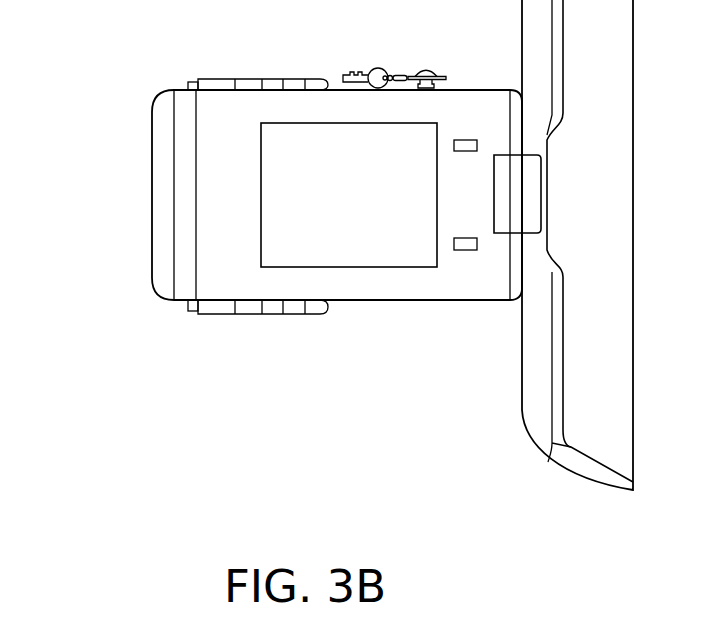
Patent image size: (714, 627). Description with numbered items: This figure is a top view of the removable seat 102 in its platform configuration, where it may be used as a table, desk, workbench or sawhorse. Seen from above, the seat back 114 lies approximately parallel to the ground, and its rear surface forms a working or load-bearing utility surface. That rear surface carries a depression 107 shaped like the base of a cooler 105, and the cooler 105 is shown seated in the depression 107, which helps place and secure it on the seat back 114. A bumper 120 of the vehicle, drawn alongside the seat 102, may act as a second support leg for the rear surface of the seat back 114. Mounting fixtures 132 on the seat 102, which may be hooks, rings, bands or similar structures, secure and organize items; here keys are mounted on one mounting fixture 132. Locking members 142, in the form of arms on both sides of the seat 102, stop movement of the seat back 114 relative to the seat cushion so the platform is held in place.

The removable seat 102 is at (104, 85).
The cooler 105 is at (338, 210).
The depression 107 is at (286, 157).
The seat back 114 is at (283, 296).
The bumper 120 is at (562, 464).
The mounting fixture 132 is at (428, 72).
The locking members 142 is at (296, 80).